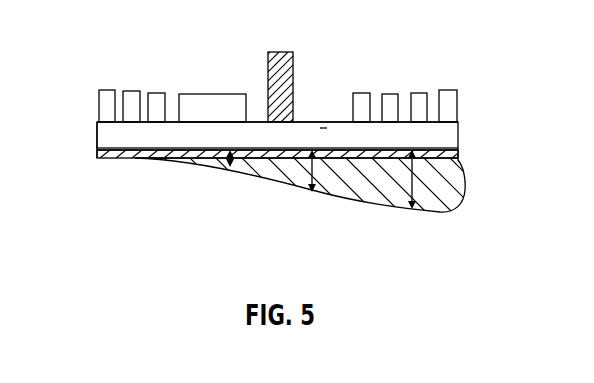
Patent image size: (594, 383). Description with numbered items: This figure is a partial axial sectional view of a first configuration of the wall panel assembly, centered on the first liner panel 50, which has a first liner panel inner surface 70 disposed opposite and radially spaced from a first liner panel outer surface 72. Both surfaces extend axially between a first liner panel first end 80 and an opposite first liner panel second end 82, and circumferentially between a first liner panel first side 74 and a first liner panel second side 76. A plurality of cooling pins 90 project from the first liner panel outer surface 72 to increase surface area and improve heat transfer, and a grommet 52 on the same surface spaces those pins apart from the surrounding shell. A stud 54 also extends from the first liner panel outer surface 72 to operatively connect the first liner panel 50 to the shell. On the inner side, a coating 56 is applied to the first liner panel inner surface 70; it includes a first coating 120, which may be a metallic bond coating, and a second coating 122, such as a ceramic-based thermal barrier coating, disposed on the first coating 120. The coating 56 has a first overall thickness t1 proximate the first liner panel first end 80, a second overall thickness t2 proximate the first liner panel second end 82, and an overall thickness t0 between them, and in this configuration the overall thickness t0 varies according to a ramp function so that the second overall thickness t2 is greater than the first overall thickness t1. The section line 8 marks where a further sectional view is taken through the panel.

The section line 8- 8 is at (193, 94).
The first liner panel 50 is at (281, 146).
The grommet 52 is at (205, 108).
The stud 54 is at (277, 66).
The coating 56 is at (314, 217).
The first liner panel inner surface 70 is at (458, 147).
The first liner panel outer surface 72 is at (437, 114).
The first liner panel first side 74 is at (323, 128).
The first liner panel second side 76 is at (300, 128).
The first liner panel first end 80 is at (97, 134).
The first liner panel second end 82 is at (460, 125).
The plurality of cooling pins 90 is at (278, 83).
The first coating 120 is at (460, 155).
The second coating 122 is at (453, 198).
The overall thickness t0 is at (320, 168).
The first overall thickness t1 is at (240, 163).
The second overall thickness t2 is at (407, 180).